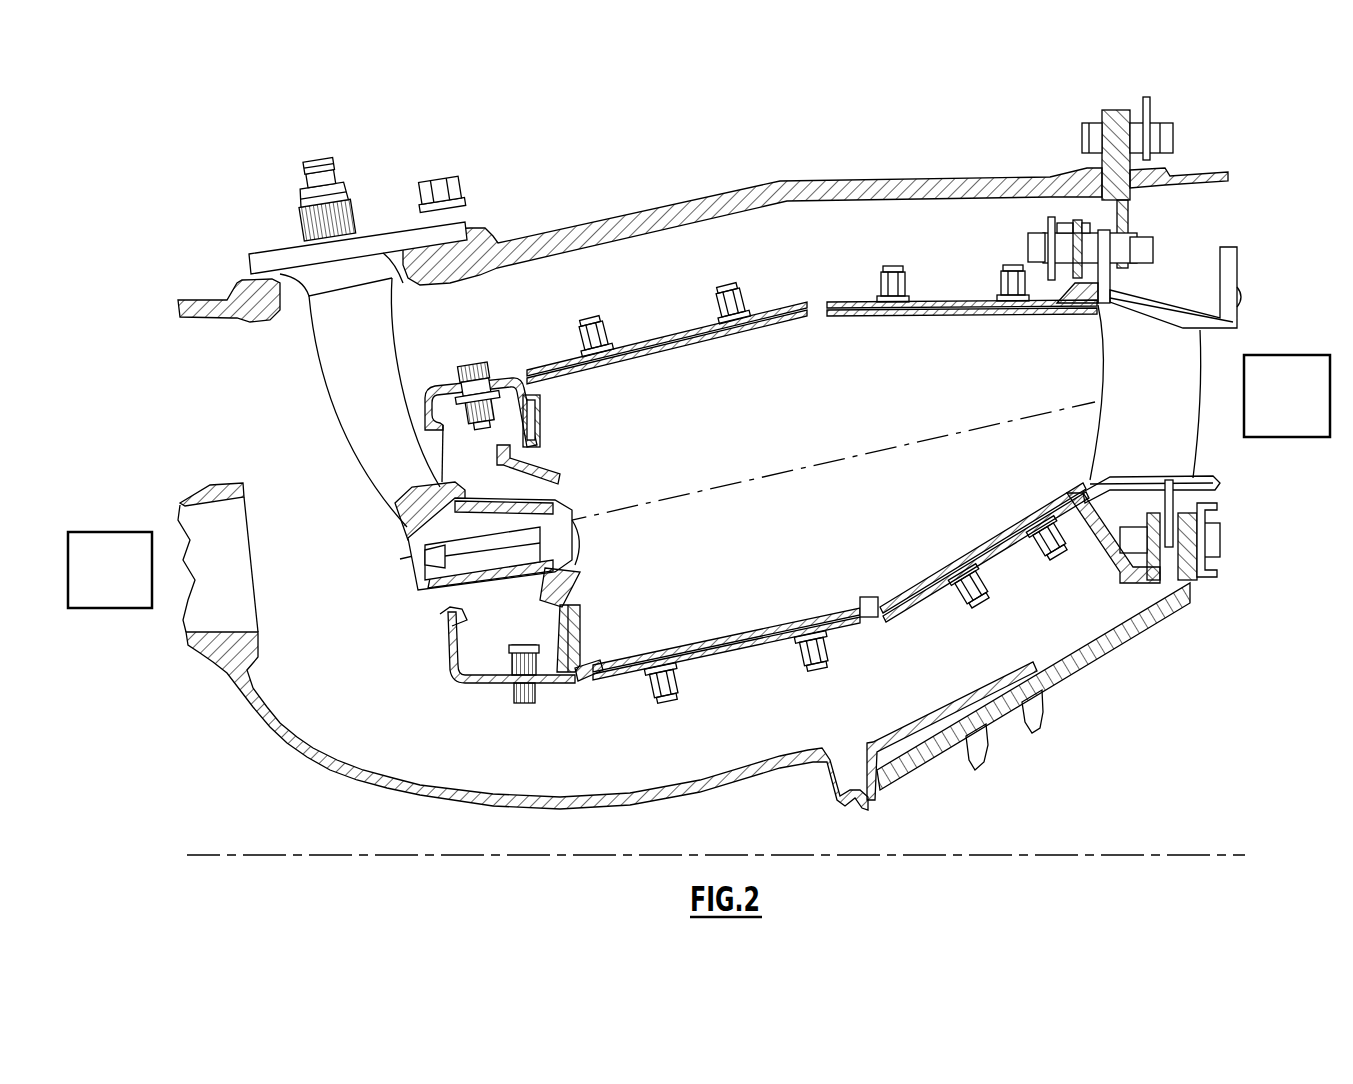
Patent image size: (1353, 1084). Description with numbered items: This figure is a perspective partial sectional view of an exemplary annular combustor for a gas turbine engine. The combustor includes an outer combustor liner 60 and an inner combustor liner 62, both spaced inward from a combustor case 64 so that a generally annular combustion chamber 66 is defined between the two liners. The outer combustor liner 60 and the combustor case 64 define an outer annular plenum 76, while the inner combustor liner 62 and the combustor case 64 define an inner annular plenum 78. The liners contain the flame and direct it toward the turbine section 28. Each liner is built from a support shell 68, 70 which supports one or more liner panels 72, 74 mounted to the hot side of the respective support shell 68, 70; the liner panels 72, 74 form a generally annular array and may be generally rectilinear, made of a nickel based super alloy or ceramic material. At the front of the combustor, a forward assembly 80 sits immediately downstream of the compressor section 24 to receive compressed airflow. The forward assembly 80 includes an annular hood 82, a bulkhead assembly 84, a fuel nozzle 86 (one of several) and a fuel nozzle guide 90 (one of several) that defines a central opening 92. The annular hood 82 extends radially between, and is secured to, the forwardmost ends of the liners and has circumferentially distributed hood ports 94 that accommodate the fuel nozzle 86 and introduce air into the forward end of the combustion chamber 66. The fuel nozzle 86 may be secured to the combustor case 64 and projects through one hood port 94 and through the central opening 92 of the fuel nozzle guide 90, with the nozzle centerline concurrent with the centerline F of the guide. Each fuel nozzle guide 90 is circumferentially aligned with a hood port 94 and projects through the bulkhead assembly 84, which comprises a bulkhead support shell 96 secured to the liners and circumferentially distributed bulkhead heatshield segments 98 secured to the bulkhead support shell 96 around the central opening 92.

The compressor section 24 is at (127, 585).
The turbine section 28 is at (1303, 409).
The outer combustor liner 60 is at (725, 288).
The inner combustor liner 62 is at (900, 630).
The combustor case 64 is at (1004, 176).
The combustion chamber 66 is at (843, 475).
The support shell 68 is at (850, 306).
The support shell 70 is at (857, 620).
The liner panel 72 is at (860, 331).
The liner panel 74 is at (911, 548).
The outer annular plenum 76 is at (806, 255).
The inner annular plenum 78 is at (731, 748).
The forward assembly 80 is at (409, 658).
The annular hood 82 is at (457, 672).
The bulkhead assembly 84 is at (546, 426).
The fuel nozzle 86 is at (400, 518).
The fuel nozzle guide 90 is at (584, 580).
The central opening 92 is at (561, 481).
The hood port 94 is at (448, 612).
The bulkhead support shell 96 is at (586, 672).
The bulkhead heatshield segment 98 is at (588, 632).
The centerline F is at (604, 330).